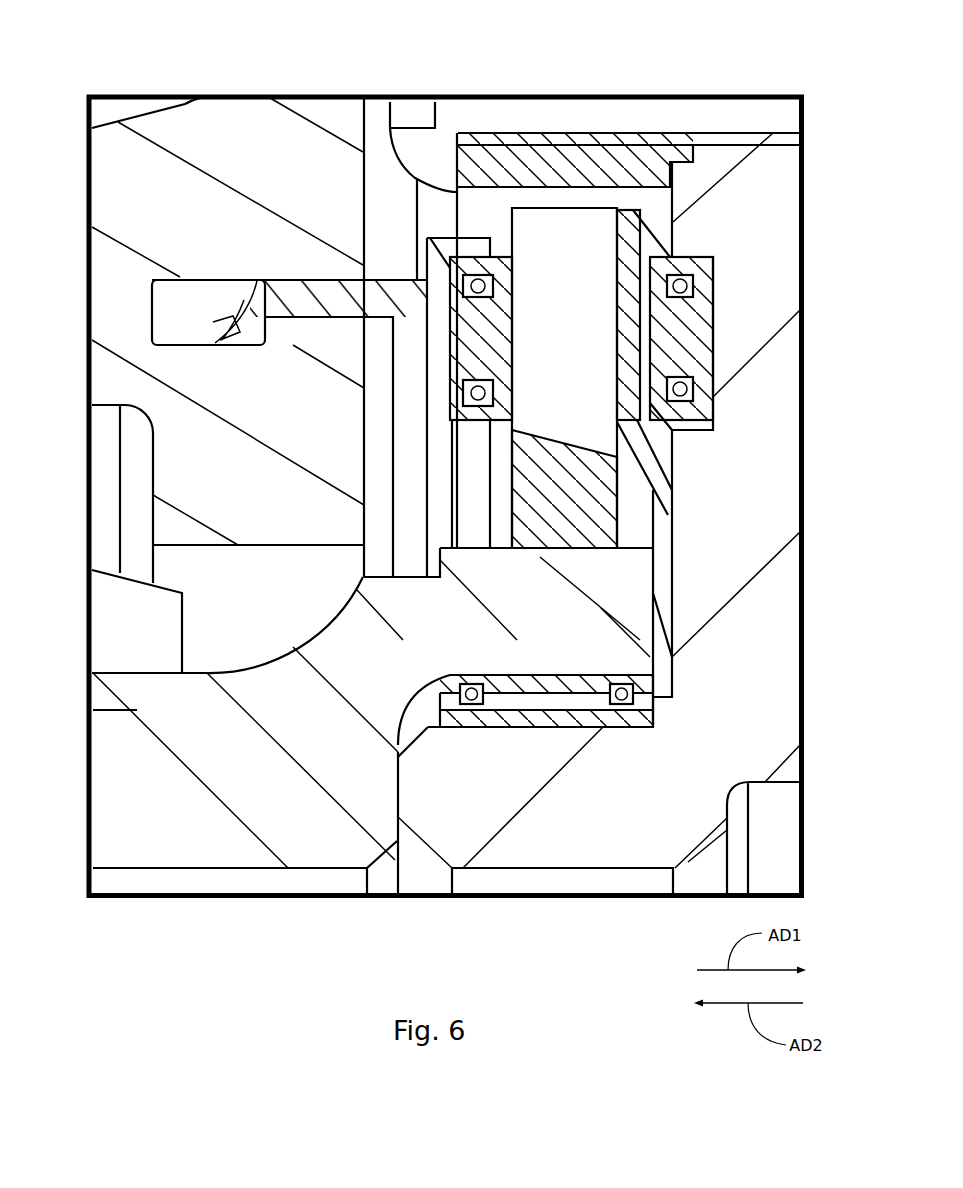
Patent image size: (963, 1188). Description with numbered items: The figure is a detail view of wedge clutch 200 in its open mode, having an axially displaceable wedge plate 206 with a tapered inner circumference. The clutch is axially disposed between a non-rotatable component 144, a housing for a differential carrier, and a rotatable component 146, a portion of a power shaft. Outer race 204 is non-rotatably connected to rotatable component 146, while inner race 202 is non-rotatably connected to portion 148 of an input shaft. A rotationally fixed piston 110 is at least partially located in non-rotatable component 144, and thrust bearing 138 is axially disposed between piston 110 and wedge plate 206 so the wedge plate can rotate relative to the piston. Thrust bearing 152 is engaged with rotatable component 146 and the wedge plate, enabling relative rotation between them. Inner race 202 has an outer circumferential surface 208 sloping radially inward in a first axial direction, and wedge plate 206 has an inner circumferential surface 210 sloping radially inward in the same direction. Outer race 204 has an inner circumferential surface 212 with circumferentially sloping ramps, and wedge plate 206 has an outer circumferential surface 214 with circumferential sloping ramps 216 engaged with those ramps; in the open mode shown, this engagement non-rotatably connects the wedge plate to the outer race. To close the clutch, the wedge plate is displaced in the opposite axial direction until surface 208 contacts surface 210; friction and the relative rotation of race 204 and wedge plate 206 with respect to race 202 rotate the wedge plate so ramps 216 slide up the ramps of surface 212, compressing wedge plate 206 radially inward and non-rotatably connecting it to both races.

The piston 110 is at (288, 293).
The thrust bearing 138 is at (450, 252).
The non-rotatable component 144 is at (145, 187).
The rotatable component 146 is at (777, 163).
The portion of input shaft 148 is at (218, 843).
The thrust bearing 152 is at (722, 280).
The wedge clutch 200 is at (653, 70).
The inner race 202 is at (640, 443).
The outer race 204 is at (470, 128).
The wedge plate 206 is at (574, 375).
The outer circumferential surface 208 is at (640, 443).
The inner circumferential surface 210 is at (628, 518).
The inner circumferential surface 212 is at (500, 200).
The outer circumferential surface 214 is at (542, 174).
The circumferential sloping ramps 216 is at (620, 200).